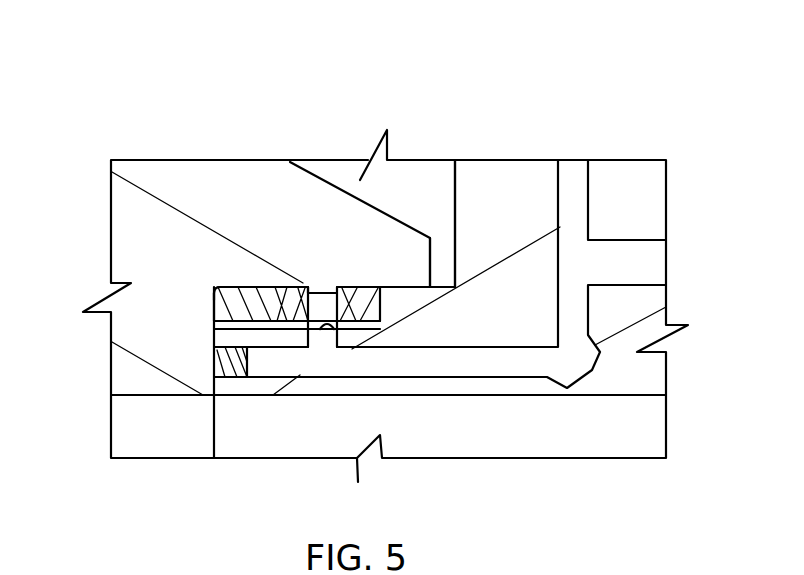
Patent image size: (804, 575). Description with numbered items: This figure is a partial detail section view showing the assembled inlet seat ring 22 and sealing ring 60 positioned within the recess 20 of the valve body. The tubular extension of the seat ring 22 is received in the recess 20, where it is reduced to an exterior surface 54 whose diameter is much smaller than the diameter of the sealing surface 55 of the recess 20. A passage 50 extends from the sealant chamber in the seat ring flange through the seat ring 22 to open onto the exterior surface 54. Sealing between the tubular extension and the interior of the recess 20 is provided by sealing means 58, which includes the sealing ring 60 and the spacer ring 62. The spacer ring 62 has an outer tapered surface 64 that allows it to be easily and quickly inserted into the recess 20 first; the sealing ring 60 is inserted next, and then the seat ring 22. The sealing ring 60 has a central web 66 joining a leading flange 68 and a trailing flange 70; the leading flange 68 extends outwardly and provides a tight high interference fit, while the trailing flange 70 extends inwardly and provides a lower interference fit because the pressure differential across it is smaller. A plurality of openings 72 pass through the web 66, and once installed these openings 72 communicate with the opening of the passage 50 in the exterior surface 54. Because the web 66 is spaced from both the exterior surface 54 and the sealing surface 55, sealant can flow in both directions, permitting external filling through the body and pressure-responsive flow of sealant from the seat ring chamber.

The recess 20 is at (138, 432).
The inlet seat ring 22 is at (656, 195).
The passage 50 is at (561, 196).
The exterior surface 54 is at (332, 326).
The sealing surface 55 is at (419, 288).
The sealing means 58 is at (312, 277).
The sealing ring 60 is at (386, 292).
The spacer ring 62 is at (215, 303).
The outer tapered surface 64 is at (226, 287).
The central web 66 is at (343, 287).
The leading flange 68 is at (214, 357).
The trailing flange 70 is at (386, 292).
The openings 72 is at (303, 285).